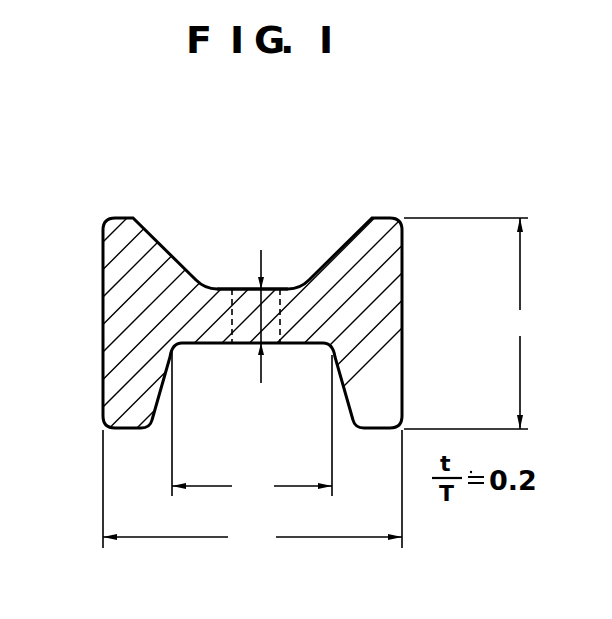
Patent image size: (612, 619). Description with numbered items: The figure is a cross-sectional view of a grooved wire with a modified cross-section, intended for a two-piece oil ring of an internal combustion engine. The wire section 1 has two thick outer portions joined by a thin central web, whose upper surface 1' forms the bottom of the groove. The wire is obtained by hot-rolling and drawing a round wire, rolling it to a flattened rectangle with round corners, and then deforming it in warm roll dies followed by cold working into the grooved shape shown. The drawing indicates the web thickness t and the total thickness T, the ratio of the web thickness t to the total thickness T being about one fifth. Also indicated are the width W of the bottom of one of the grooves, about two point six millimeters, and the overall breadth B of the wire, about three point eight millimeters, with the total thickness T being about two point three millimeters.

The tread block cross-section 1 is at (308, 309).
The groove bottom portion 1' is at (236, 246).
The web thickness t is at (253, 316).
The total thickness T is at (519, 323).
The width of bottom of groove W is at (252, 486).
The overall breadth B is at (252, 537).